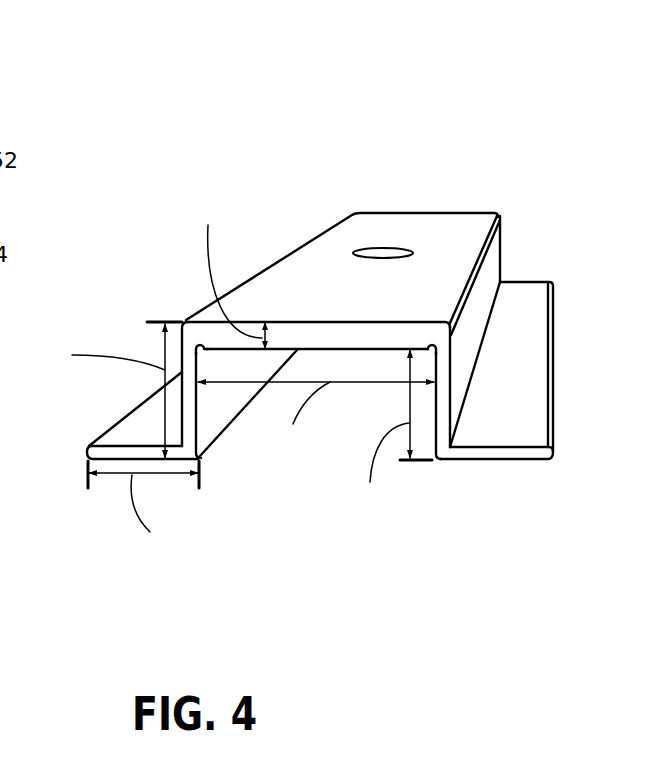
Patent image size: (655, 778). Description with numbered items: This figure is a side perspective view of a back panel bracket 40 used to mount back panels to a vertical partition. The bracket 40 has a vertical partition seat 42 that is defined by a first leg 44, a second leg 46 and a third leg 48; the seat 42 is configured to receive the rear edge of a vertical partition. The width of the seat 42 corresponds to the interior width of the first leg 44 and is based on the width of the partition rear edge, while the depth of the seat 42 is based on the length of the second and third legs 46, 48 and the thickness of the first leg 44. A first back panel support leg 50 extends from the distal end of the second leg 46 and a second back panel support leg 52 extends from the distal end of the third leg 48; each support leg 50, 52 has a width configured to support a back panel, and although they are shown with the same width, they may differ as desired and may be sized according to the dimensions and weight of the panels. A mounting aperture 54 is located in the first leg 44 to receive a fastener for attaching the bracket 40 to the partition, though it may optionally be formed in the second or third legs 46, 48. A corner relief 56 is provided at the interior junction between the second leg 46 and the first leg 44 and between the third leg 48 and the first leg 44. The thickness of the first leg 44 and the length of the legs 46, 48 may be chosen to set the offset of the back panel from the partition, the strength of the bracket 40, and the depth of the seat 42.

The bracket 40 is at (382, 160).
The vertical partition seat 42 is at (340, 430).
The first leg 44 is at (447, 228).
The second leg 46 is at (181, 358).
The third leg 48 is at (448, 378).
The first back panel support leg 50 is at (86, 452).
The second back panel support leg 52 is at (519, 461).
The mounting aperture 54 is at (381, 252).
The corner relief 56 is at (203, 347).